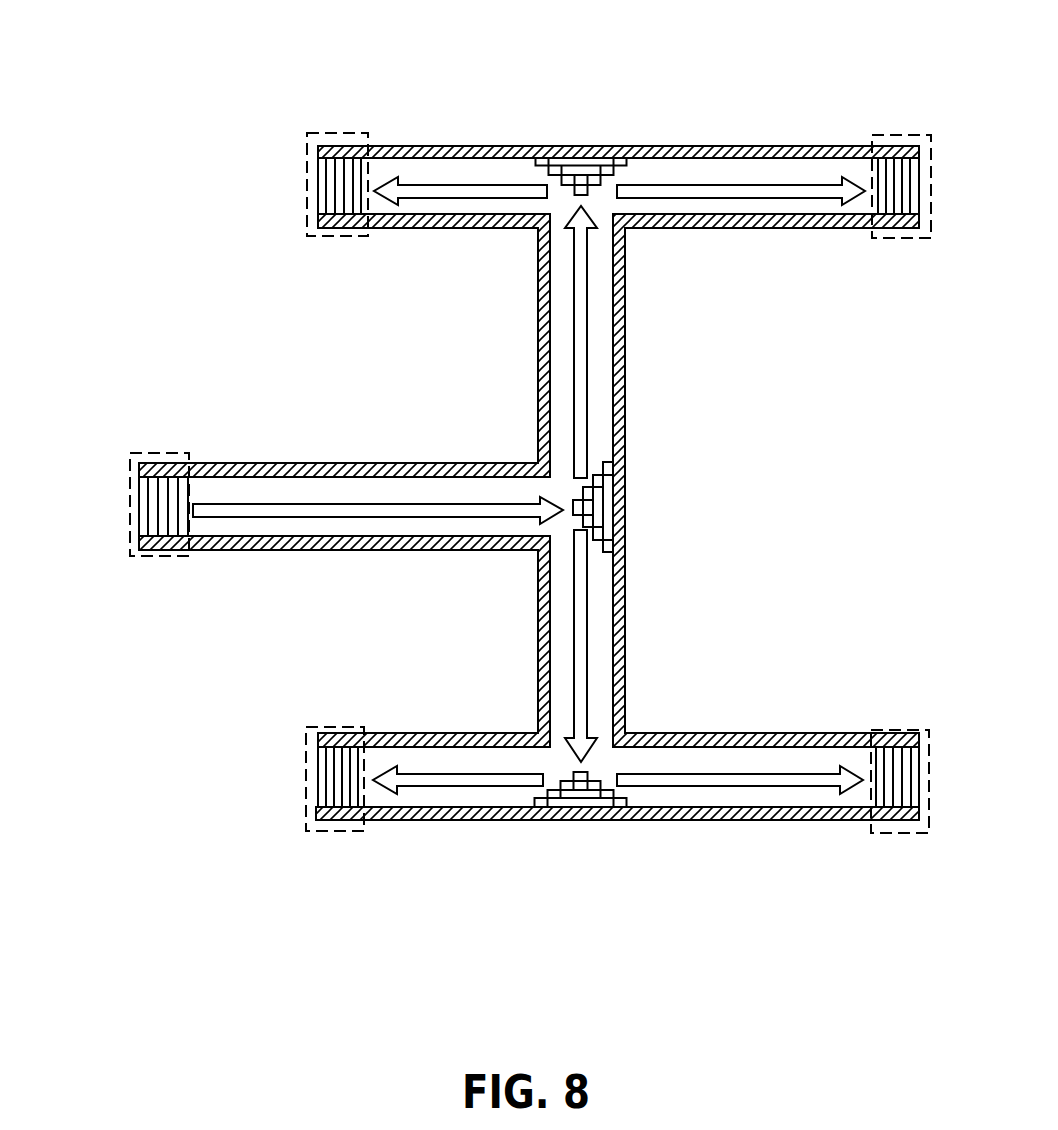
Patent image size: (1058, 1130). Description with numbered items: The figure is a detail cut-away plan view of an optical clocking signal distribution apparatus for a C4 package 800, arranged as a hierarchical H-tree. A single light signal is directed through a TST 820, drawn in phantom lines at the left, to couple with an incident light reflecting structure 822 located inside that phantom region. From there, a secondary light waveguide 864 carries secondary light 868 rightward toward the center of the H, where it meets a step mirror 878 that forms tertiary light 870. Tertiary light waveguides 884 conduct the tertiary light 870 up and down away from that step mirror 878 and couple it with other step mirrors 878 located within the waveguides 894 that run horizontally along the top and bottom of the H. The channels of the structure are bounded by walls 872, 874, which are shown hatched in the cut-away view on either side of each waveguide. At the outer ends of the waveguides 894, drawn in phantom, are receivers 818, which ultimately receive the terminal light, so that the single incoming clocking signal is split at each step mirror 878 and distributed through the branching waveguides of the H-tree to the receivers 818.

The C4 package 800 is at (810, 68).
The receivers 818 is at (318, 131).
The TST 820 is at (121, 475).
The incident light reflecting structure 822 is at (152, 514).
The secondary light waveguide 864 is at (378, 582).
The secondary light 868 is at (298, 513).
The tertiary light 870 is at (587, 392).
The first channel wall 872 is at (437, 145).
The second channel wall 874 is at (425, 229).
The step mirror 878 is at (582, 166).
The tertiary light waveguides 884 is at (663, 484).
The waveguides 894 is at (475, 133).